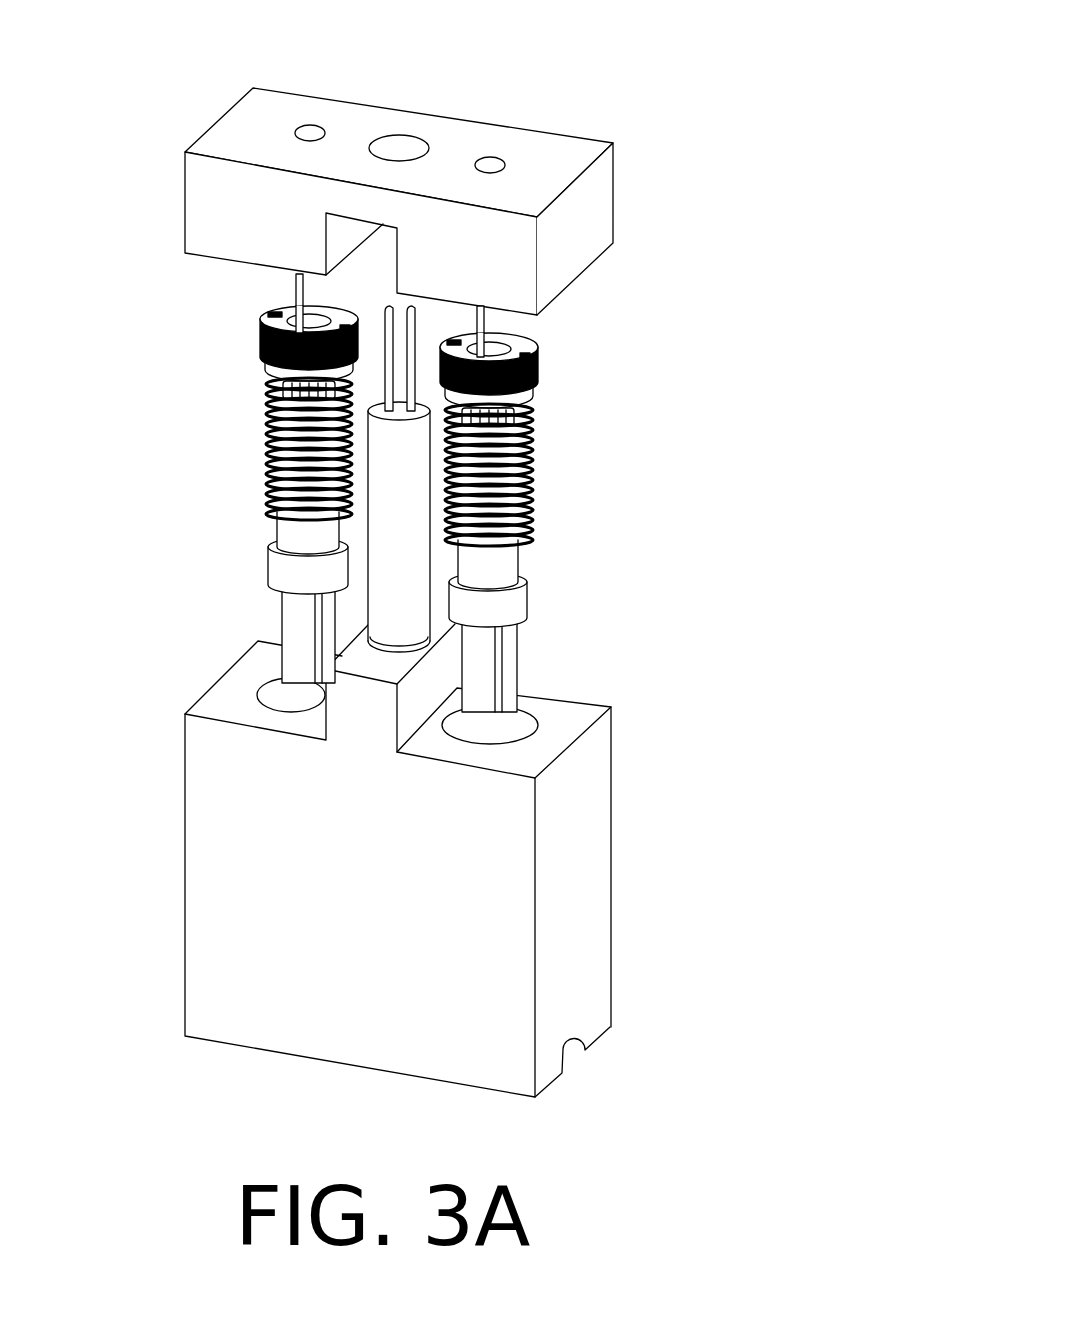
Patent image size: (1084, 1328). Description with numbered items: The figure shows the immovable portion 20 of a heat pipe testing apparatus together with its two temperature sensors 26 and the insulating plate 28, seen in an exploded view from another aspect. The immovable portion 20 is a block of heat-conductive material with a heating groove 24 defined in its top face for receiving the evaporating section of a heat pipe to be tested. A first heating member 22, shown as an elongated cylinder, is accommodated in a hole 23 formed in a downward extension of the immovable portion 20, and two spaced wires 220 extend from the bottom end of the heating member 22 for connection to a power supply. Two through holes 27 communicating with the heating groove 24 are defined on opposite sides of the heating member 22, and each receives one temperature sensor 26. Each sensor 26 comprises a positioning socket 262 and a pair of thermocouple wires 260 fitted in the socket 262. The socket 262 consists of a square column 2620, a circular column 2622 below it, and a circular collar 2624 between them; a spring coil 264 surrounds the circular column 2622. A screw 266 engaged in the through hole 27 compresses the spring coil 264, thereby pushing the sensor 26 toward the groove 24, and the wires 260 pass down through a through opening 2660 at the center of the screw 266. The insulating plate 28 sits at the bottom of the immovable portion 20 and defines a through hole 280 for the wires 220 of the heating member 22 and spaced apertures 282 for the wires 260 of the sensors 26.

The immovable portion 20 is at (267, 823).
The first heating member 22 is at (259, 479).
The hole 23 is at (380, 645).
The heating groove 24 is at (574, 1056).
The temperature sensor 26 is at (707, 480).
The through hole 27 is at (485, 724).
The insulating plate 28 is at (460, 157).
The wires 220 is at (377, 375).
The thermocouple wires 260 is at (530, 411).
The positioning socket 262 is at (654, 615).
The spring coil 264 is at (533, 464).
The screw 266 is at (646, 328).
The through hole 280 is at (401, 148).
The apertures 282 is at (310, 127).
The square column 2620 is at (483, 667).
The circular column 2622 is at (490, 562).
The circular collar 2624 is at (510, 600).
The through opening 2660 is at (525, 337).